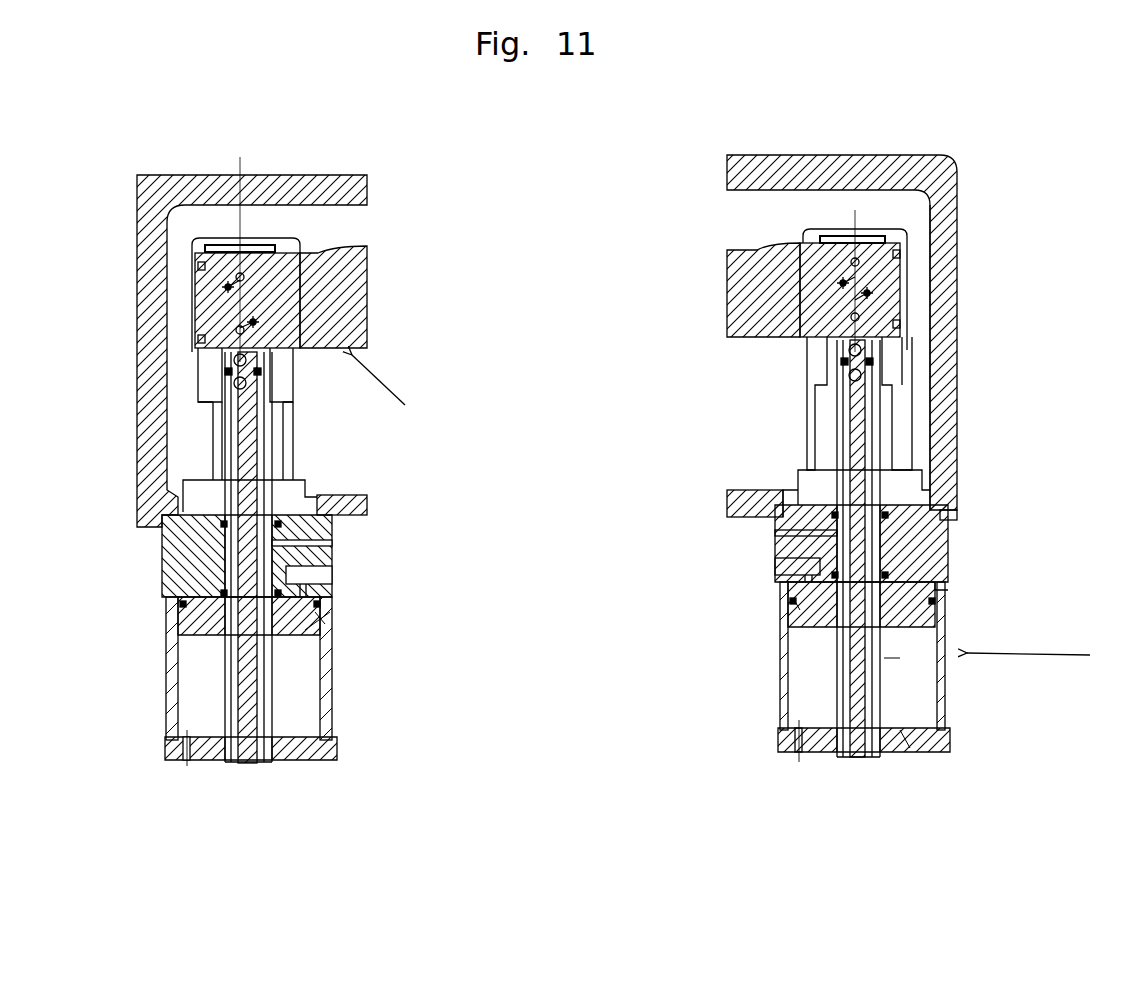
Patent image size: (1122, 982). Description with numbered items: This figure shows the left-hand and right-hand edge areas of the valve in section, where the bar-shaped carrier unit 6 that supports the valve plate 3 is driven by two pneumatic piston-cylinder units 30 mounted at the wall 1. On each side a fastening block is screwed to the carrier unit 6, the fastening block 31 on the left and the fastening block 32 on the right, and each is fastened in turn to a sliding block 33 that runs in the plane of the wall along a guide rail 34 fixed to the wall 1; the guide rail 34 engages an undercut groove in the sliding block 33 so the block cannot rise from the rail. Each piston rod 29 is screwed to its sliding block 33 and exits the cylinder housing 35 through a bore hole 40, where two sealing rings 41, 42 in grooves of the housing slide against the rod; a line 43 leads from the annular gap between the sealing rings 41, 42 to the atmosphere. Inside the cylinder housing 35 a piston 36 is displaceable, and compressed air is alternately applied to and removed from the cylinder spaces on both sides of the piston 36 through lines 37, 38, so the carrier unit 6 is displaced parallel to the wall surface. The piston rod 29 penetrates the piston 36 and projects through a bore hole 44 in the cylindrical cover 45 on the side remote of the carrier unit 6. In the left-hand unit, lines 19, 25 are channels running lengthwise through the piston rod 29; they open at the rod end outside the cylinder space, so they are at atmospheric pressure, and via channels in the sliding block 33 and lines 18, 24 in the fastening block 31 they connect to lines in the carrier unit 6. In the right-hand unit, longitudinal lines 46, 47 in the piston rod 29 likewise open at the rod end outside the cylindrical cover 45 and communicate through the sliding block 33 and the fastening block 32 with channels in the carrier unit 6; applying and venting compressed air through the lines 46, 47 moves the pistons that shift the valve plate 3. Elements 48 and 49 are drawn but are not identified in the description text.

The wall 1 is at (295, 222).
The valve plate 3 is at (347, 240).
The carrier unit 6 is at (386, 392).
The line 18 is at (200, 282).
The line 19 is at (230, 552).
The line 24 is at (205, 323).
The line 25 is at (237, 583).
The piston rod 29 is at (233, 652).
The piston-cylinder unit 30 is at (1043, 656).
The fastening block 31 is at (206, 297).
The fastening block 32 is at (895, 232).
The sliding block 33 is at (210, 372).
The guide rail 34 is at (218, 430).
The cylinder housing 35 is at (335, 697).
The piston 36 is at (330, 628).
The line 37 is at (330, 581).
The line 38 is at (185, 748).
The bore hole 40 is at (893, 535).
The sealing ring 41 is at (900, 502).
The sealing ring 42 is at (935, 580).
The line 43 is at (327, 545).
The bore hole 44 is at (950, 745).
The cylindrical cover 45 is at (310, 752).
The line 46 is at (930, 602).
The line 47 is at (885, 658).
The sensor 48 is at (885, 278).
The sensor 49 is at (875, 292).